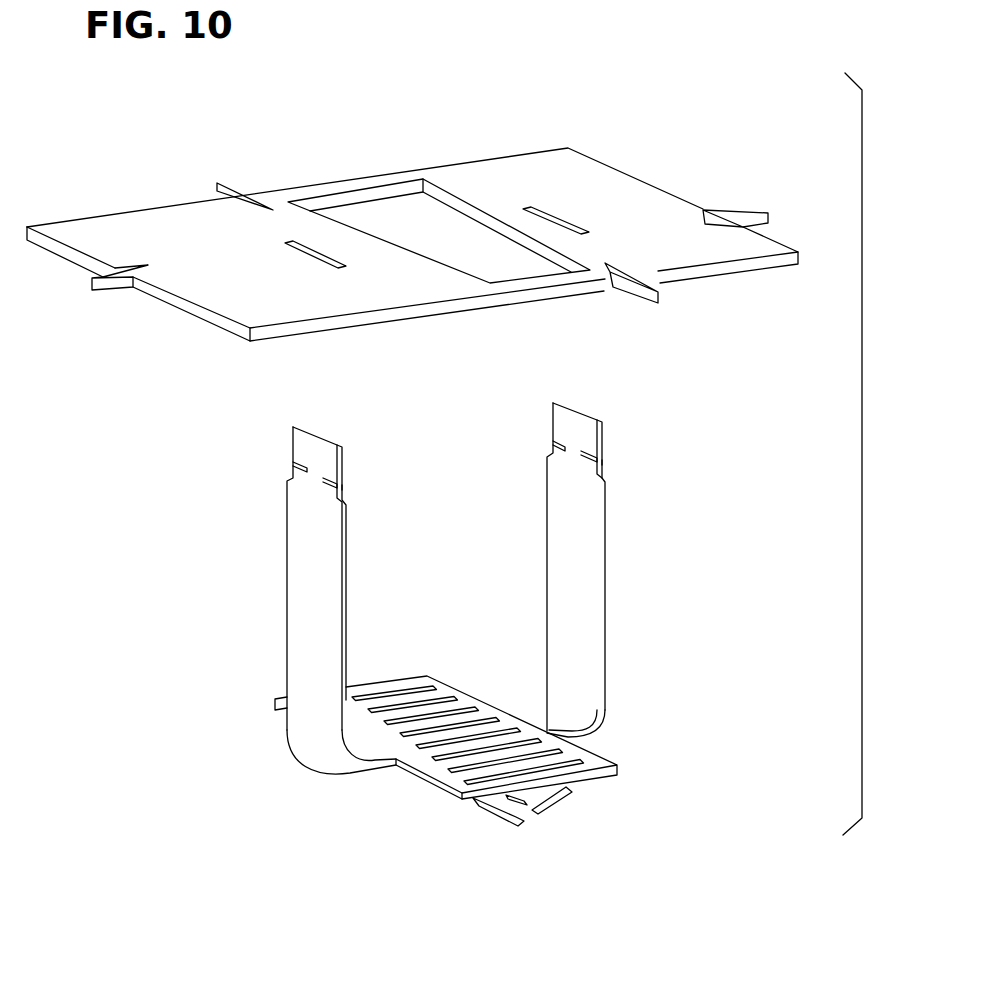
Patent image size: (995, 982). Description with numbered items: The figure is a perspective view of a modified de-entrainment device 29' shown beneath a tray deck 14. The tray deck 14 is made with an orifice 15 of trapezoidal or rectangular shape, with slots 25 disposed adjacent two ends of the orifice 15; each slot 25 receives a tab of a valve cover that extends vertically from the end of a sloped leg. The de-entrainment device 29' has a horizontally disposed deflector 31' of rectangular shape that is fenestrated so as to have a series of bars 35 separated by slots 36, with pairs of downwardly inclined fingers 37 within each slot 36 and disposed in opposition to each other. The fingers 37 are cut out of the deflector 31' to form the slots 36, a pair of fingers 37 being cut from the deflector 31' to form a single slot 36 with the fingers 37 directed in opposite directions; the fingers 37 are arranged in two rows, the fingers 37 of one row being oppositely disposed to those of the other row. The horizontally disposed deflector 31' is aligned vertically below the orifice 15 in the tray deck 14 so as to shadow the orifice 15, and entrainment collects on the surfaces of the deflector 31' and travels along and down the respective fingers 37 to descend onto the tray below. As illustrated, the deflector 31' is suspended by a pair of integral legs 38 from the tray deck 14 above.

The tray deck 14 is at (158, 218).
The orifice 15 is at (505, 258).
The slot 25 is at (303, 243).
The de-entrainment device 29' is at (511, 636).
The integral leg 38 is at (305, 612).
The slot 36 is at (385, 694).
The bar 35 is at (440, 713).
The deflector 31' is at (512, 753).
The finger 37 is at (552, 803).